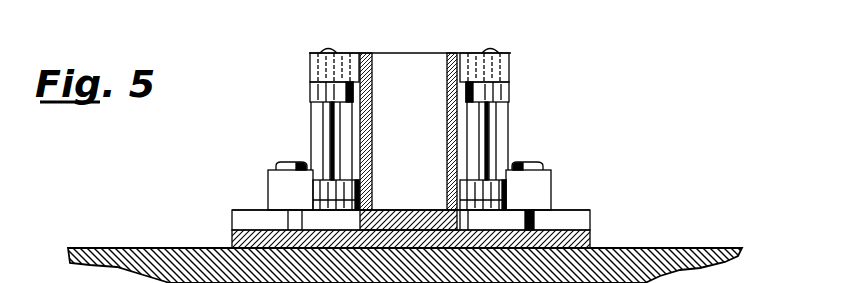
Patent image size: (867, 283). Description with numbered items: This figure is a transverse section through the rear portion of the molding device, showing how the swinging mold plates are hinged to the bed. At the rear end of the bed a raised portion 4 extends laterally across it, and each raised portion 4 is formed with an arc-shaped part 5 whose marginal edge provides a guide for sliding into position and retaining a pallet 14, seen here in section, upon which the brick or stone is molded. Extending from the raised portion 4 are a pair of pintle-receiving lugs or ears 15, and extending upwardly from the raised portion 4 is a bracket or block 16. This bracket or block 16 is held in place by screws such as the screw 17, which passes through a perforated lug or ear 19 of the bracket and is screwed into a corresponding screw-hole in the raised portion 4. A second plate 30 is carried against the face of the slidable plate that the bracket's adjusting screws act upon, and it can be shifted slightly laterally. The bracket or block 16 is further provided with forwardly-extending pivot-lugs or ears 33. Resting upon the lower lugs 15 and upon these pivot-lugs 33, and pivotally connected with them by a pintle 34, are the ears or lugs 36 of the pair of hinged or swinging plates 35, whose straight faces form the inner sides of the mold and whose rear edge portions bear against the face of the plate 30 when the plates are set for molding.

The raised portion 4 is at (250, 217).
The arc-shaped part 5 is at (233, 230).
The pallet 14 is at (408, 210).
The pintle-receiving lug 15 is at (270, 203).
The bracket or block 16 is at (325, 132).
The screw 17 is at (278, 166).
The perforated lug or ear 19 is at (268, 172).
The second plate 30 is at (410, 62).
The pivot-lug or ear 33 is at (313, 90).
The pintle 34 is at (329, 50).
The hinged or swinging plate 35 is at (448, 120).
The ear or lug 36 is at (312, 62).